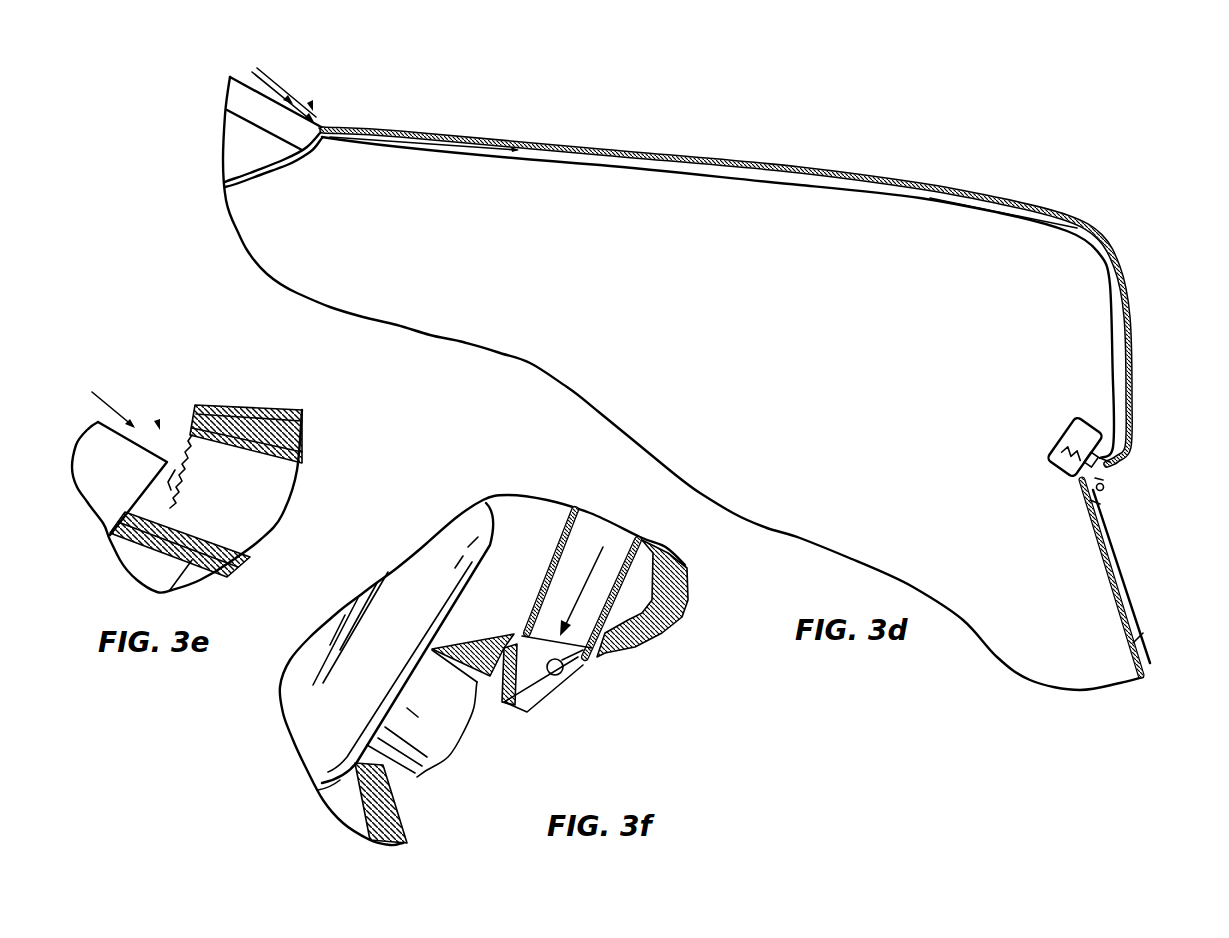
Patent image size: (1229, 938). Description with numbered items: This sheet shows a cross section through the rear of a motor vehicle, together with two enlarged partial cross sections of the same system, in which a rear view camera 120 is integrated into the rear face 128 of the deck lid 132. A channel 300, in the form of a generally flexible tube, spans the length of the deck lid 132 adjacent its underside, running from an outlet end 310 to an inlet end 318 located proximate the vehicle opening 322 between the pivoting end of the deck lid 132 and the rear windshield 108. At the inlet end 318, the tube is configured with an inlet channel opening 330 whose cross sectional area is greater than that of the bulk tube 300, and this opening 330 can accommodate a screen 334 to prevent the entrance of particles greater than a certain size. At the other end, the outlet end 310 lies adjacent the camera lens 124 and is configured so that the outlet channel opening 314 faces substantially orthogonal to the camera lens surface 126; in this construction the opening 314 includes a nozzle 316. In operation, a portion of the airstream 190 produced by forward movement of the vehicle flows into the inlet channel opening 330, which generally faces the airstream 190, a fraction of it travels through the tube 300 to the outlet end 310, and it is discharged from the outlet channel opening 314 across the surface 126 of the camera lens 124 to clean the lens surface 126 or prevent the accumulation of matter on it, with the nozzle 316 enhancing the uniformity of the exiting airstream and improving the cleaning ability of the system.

In FIG. 3d, the rear windshield 108 is at (247, 100).
In FIG. 3e, the rear windshield 108 is at (102, 452).
In FIG. 3d, the rear view camera 120 is at (1047, 460).
In FIG. 3f, the rear view camera 120 is at (440, 547).
In FIG. 3d, the camera lens 124 is at (1100, 483).
In FIG. 3f, the camera lens 124 is at (447, 760).
In FIG. 3d, the camera lens surface 126 is at (1097, 503).
In FIG. 3f, the camera lens surface 126 is at (418, 777).
In FIG. 3d, the rear face 128 is at (1130, 320).
In FIG. 3d, the deck lid 132 is at (997, 197).
In FIG. 3d, the airstream 190 is at (268, 80).
In FIG. 3e, the airstream 190 is at (112, 403).
In FIG. 3d, the channel 300 is at (697, 170).
In FIG. 3d, the outlet end 310 is at (1110, 460).
In FIG. 3f, the outlet end 310 is at (582, 673).
In FIG. 3d, the outlet channel opening 314 is at (1103, 467).
In FIG. 3f, the outlet channel opening 314 is at (552, 668).
In FIG. 3f, the nozzle 316 is at (535, 710).
In FIG. 3d, the inlet end 318 is at (330, 128).
In FIG. 3e, the inlet end 318 is at (186, 405).
In FIG. 3d, the vehicle opening 322 is at (312, 108).
In FIG. 3e, the vehicle opening 322 is at (158, 427).
In FIG. 3d, the inlet channel opening 330 is at (322, 126).
In FIG. 3e, the inlet channel opening 330 is at (178, 440).
In FIG. 3e, the screen 334 is at (177, 468).